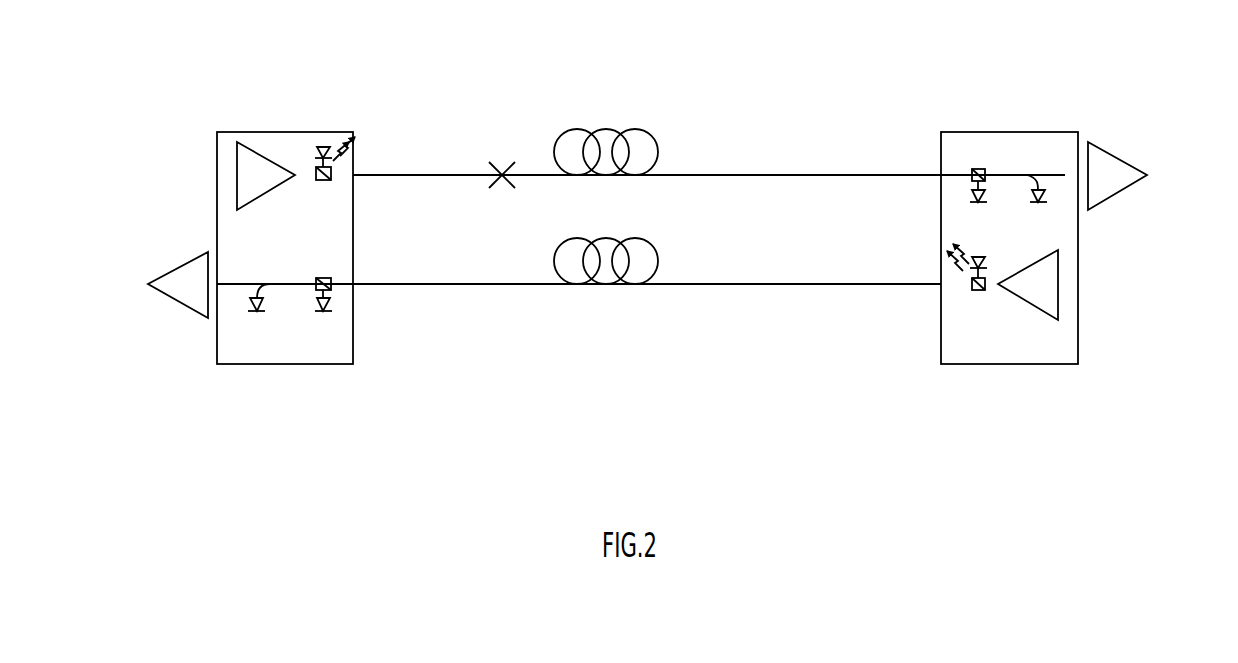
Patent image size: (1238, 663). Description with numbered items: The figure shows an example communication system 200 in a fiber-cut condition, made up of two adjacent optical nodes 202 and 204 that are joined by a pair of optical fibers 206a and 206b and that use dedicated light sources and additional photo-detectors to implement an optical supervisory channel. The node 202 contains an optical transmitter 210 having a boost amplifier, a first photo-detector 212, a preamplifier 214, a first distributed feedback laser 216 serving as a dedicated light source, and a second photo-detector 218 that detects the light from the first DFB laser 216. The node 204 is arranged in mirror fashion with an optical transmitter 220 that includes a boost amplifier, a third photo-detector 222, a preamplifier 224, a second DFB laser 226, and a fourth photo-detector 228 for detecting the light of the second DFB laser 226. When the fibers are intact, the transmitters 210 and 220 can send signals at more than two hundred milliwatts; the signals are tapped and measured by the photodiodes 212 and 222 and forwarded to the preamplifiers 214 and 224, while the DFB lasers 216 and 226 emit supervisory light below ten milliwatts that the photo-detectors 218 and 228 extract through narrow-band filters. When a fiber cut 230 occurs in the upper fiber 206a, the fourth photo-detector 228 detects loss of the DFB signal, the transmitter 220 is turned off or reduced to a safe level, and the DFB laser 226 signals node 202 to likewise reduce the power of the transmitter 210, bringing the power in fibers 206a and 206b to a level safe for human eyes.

The communication system 200 is at (91, 50).
The optical node 202 is at (257, 132).
The optical node 204 is at (972, 132).
The optical fiber 206a is at (818, 174).
The optical fiber 206b is at (776, 283).
The optical transmitter 210 is at (237, 175).
The first photo-detector 212 is at (254, 312).
The preamplifier 214 is at (162, 298).
The first distributed feedback (DFB) laser 216 is at (326, 147).
The second photo-detector 218 is at (320, 312).
The optical transmitter 220 is at (1058, 270).
The third photo-detector 222 is at (1038, 203).
The preamplifier 224 is at (1127, 160).
The second DFB laser 226 is at (971, 284).
The fourth photo-detector 228 is at (981, 169).
The fiber cut 230 is at (502, 163).